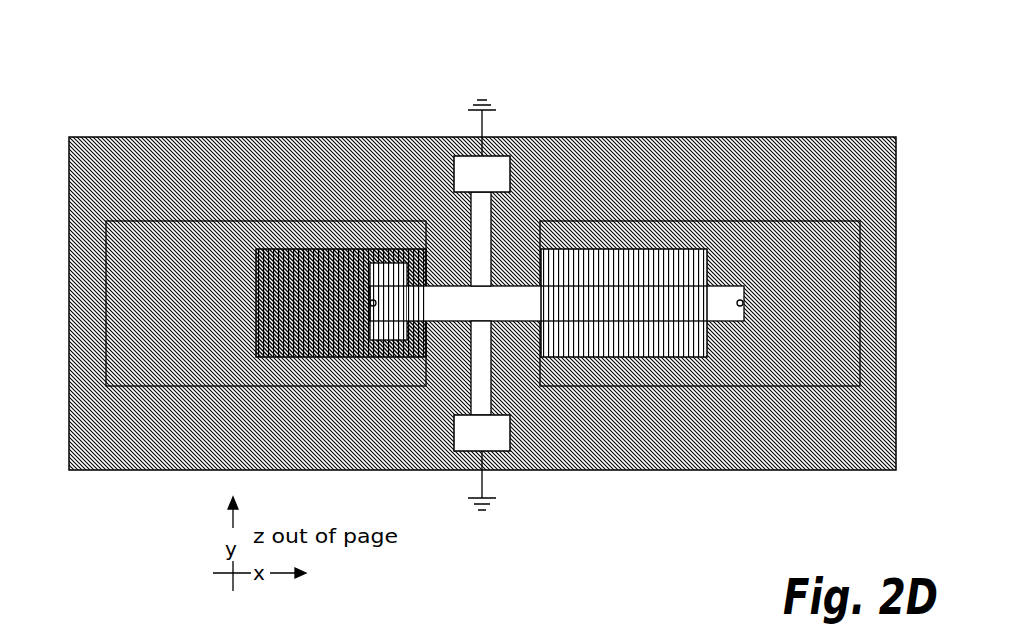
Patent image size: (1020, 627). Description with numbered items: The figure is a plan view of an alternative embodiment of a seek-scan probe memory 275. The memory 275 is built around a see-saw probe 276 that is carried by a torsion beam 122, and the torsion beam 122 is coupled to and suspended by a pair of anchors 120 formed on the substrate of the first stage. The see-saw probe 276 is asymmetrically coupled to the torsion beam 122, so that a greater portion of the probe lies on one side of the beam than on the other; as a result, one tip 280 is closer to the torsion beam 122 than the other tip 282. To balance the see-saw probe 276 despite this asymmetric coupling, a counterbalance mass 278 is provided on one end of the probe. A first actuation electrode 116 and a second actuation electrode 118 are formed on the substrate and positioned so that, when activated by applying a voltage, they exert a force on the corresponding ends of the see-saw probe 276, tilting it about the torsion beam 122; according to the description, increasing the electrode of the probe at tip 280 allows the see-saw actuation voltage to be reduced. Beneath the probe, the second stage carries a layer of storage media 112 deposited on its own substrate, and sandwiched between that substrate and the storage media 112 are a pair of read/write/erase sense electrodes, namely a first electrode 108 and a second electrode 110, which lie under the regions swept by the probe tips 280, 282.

The SSP memory 275 is at (483, 290).
The first electrode 108 is at (153, 213).
The second electrode 110 is at (793, 212).
The storage media 112 is at (243, 453).
The first actuation electrode 116 is at (262, 348).
The second actuation electrode 118 is at (643, 350).
The anchors 120 is at (486, 166).
The torsion beam 122 is at (470, 238).
The see-saw probe 276 is at (575, 377).
The counterbalance mass 278 is at (383, 323).
The tip 280 is at (362, 290).
The tip 282 is at (732, 291).